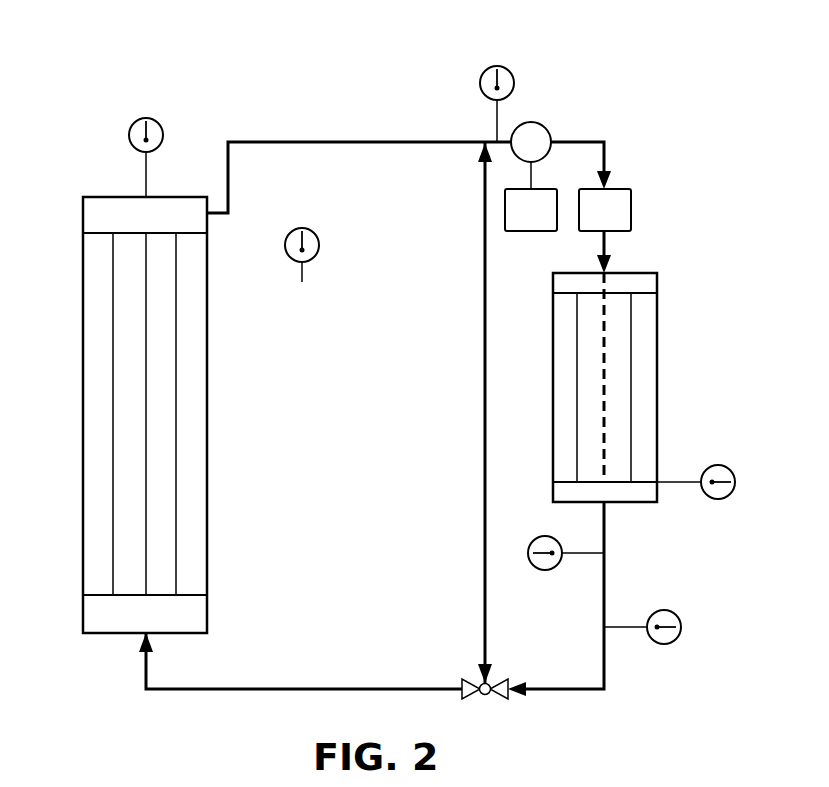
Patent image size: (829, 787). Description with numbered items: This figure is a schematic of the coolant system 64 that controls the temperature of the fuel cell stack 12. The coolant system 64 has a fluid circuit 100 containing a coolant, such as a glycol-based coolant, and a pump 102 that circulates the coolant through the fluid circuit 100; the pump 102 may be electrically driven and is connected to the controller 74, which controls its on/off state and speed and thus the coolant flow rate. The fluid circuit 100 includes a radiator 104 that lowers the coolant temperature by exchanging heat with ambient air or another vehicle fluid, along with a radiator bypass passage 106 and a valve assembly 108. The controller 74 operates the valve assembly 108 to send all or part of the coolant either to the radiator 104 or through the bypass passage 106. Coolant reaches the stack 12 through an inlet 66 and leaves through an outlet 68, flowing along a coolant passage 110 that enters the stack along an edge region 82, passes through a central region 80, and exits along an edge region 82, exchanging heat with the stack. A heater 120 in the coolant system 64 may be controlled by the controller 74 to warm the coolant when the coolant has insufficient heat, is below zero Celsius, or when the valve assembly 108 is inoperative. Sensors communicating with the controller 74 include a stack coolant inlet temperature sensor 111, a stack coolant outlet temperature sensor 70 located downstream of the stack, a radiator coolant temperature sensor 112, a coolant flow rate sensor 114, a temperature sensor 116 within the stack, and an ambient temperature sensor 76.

The fuel cell stack 12 is at (657, 403).
The coolant system 64 is at (647, 65).
The inlet 66 is at (607, 271).
The outlet 68 is at (606, 505).
The stack coolant outlet temperature sensor 70 is at (548, 570).
The controller 74 is at (531, 196).
The ambient temperature sensor 76 is at (319, 245).
The central region 80 is at (620, 333).
The edge region 82 is at (620, 493).
The fluid circuit 100 is at (584, 692).
The pump 102 is at (531, 122).
The radiator 104 is at (83, 409).
The radiator bypass passage 106 is at (485, 403).
The valve assembly 108 is at (508, 700).
The coolant passage 110 is at (604, 370).
The stack coolant inlet temperature sensor 111 is at (480, 83).
The radiator coolant temperature sensor 112 is at (129, 135).
The coolant flow rate sensor 114 is at (670, 644).
The temperature sensor 116 is at (717, 465).
The heater 120 is at (591, 186).